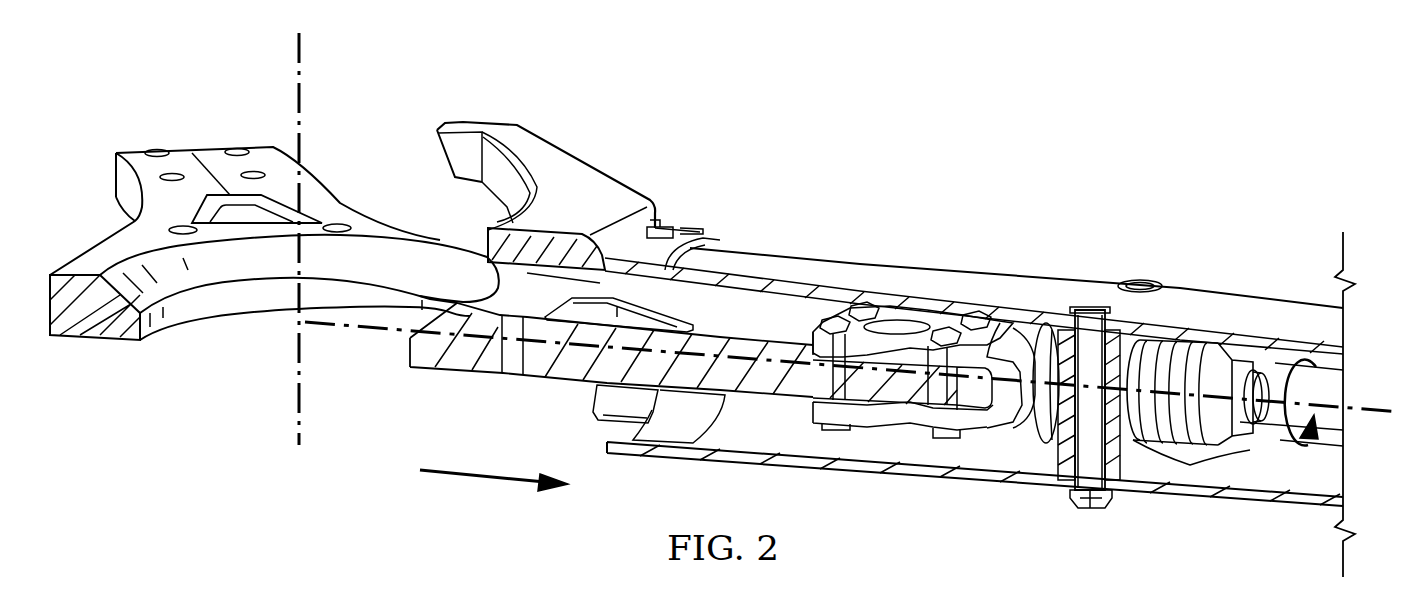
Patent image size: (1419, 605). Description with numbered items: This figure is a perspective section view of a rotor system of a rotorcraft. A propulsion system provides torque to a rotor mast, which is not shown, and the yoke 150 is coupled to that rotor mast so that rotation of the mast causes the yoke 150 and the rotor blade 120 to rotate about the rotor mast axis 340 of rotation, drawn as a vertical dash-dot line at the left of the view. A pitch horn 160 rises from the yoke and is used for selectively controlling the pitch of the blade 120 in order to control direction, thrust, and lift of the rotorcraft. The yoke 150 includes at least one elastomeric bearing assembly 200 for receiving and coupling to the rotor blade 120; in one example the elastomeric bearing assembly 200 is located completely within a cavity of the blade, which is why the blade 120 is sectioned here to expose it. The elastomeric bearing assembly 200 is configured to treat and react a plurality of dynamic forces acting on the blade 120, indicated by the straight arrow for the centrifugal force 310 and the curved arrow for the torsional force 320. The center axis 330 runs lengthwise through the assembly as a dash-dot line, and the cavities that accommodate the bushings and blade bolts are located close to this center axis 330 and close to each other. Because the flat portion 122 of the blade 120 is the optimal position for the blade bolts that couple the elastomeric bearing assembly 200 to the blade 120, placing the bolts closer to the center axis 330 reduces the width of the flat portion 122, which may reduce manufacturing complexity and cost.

The rotor blade 120 is at (918, 266).
The flat portion 122 is at (1109, 299).
The yoke 150 is at (213, 145).
The pitch horn 160 is at (588, 161).
The elastomeric bearing assembly 200 is at (1033, 330).
The centrifugal force 310 is at (482, 482).
The torsional force 320 is at (1307, 450).
The center axis 330 is at (1385, 417).
The rotor mast axis 340 is at (298, 55).